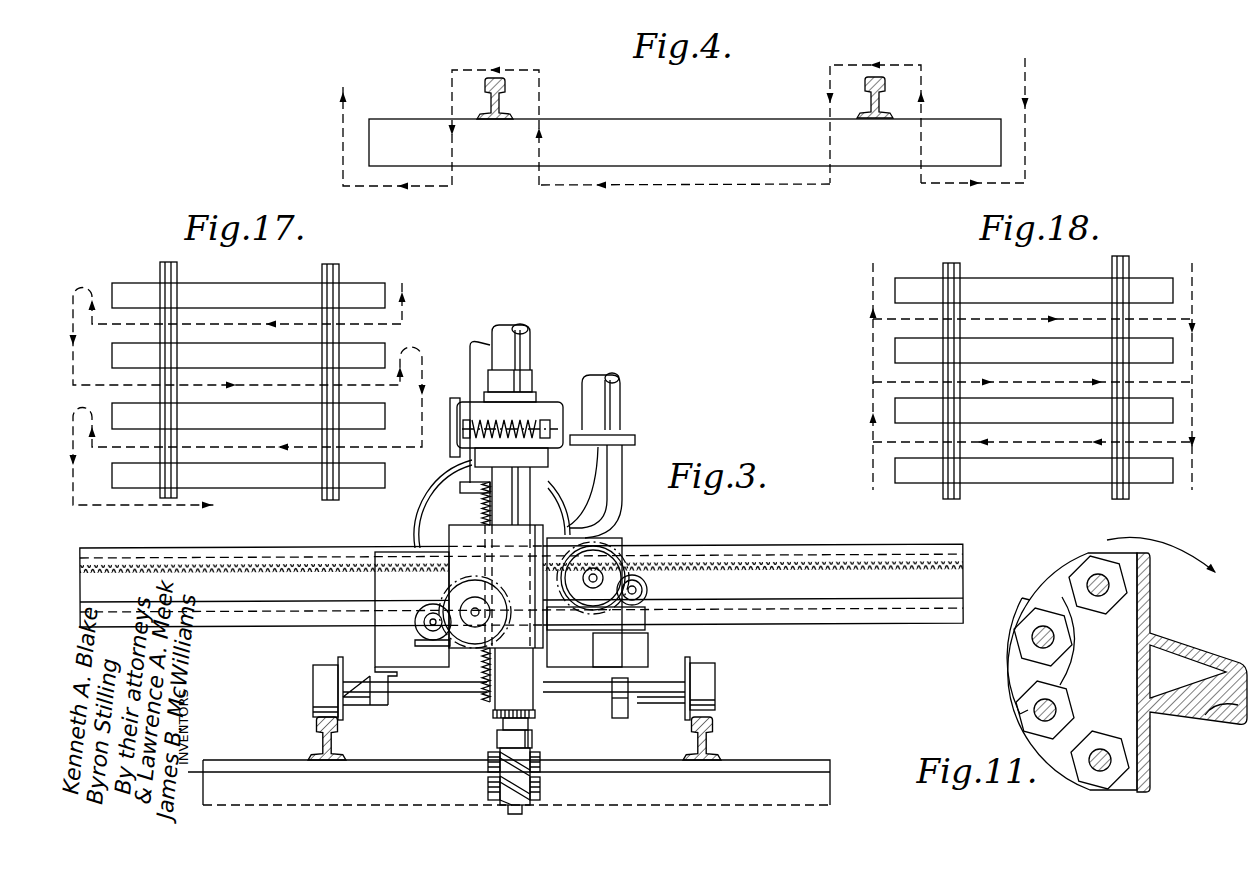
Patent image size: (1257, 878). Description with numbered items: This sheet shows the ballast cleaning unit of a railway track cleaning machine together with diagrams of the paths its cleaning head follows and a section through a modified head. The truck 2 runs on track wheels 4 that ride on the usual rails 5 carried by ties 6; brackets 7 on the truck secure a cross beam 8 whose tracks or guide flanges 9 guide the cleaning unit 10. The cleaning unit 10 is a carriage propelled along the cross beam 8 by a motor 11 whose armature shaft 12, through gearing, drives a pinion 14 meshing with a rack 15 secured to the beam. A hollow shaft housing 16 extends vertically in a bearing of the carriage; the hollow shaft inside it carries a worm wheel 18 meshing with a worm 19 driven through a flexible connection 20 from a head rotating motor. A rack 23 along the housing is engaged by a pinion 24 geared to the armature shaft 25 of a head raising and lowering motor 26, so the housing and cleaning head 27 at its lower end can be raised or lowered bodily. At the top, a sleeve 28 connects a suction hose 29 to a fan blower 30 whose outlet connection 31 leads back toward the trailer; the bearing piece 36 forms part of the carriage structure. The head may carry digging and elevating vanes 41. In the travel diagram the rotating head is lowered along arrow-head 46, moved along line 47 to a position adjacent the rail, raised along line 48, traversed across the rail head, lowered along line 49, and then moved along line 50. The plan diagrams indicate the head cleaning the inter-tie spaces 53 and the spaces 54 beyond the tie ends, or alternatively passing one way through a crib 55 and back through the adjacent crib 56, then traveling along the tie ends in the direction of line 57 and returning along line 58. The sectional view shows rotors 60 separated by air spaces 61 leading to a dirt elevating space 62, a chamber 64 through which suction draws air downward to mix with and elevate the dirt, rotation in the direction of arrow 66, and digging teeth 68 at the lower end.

In FIG. 3, the truck 2 is at (660, 673).
In FIG. 3, the track wheels 4 is at (313, 680).
In FIG. 3, the rails 5 is at (320, 737).
In FIG. 3, the ties 6 is at (753, 760).
In FIG. 3, the brackets 7 is at (375, 636).
In FIG. 3, the cross beam 8 is at (828, 580).
In FIG. 3, the tracks or guide flanges 9 is at (773, 603).
In FIG. 3, the cleaning unit 10 is at (520, 632).
In FIG. 3, the motor 11 is at (648, 589).
In FIG. 3, the armature shaft 12 is at (640, 600).
In FIG. 3, the pinion 14 is at (612, 565).
In FIG. 3, the rack 15 is at (728, 568).
In FIG. 3, the shaft housing 16 is at (530, 492).
In FIG. 3, the worm wheel 18 is at (543, 416).
In FIG. 3, the worm 19 is at (530, 398).
In FIG. 3, the flexible connection 20 is at (455, 398).
In FIG. 3, the rack 23 is at (487, 682).
In FIG. 3, the pinion 24 is at (470, 645).
In FIG. 3, the armature shaft 25 is at (430, 628).
In FIG. 3, the head raising and lowering motor 26 is at (425, 612).
In FIG. 3, the cleaning head 27 is at (538, 746).
In FIG. 3, the sleeve 28 is at (505, 370).
In FIG. 3, the suction hose 29 is at (478, 345).
In FIG. 3, the fan blower 30 is at (425, 516).
In FIG. 3, the outlet connection 31 is at (621, 440).
In FIG. 3, the bearing 36 is at (628, 716).
In FIG. 3, the digging and elevating vanes 41 is at (500, 768).
In FIG. 4, the arrow-head 46 is at (1028, 108).
In FIG. 4, the dotted line portion 47 is at (1000, 184).
In FIG. 4, the line 48 is at (925, 118).
In FIG. 4, the line 49 is at (830, 78).
In FIG. 4, the line 50 is at (686, 184).
In FIG. 17, the inter-tie spaces 53 is at (260, 315).
In FIG. 17, the spaces adjacent the ends of the ties 54 is at (108, 291).
In FIG. 18, the crib 55 is at (1040, 310).
In FIG. 18, the adjacent crib 56 is at (1048, 374).
In FIG. 18, the dotted line 57 is at (873, 370).
In FIG. 18, the line 58 is at (1197, 333).
In FIG. 11, the rotors 60 is at (1030, 700).
In FIG. 11, the air spaces 61 is at (1065, 605).
In FIG. 11, the dirt elevating space 62 is at (1072, 671).
In FIG. 11, the chamber 64 is at (1172, 660).
In FIG. 11, the arrow 66 is at (1162, 542).
In FIG. 11, the digging teeth 68 is at (1008, 640).